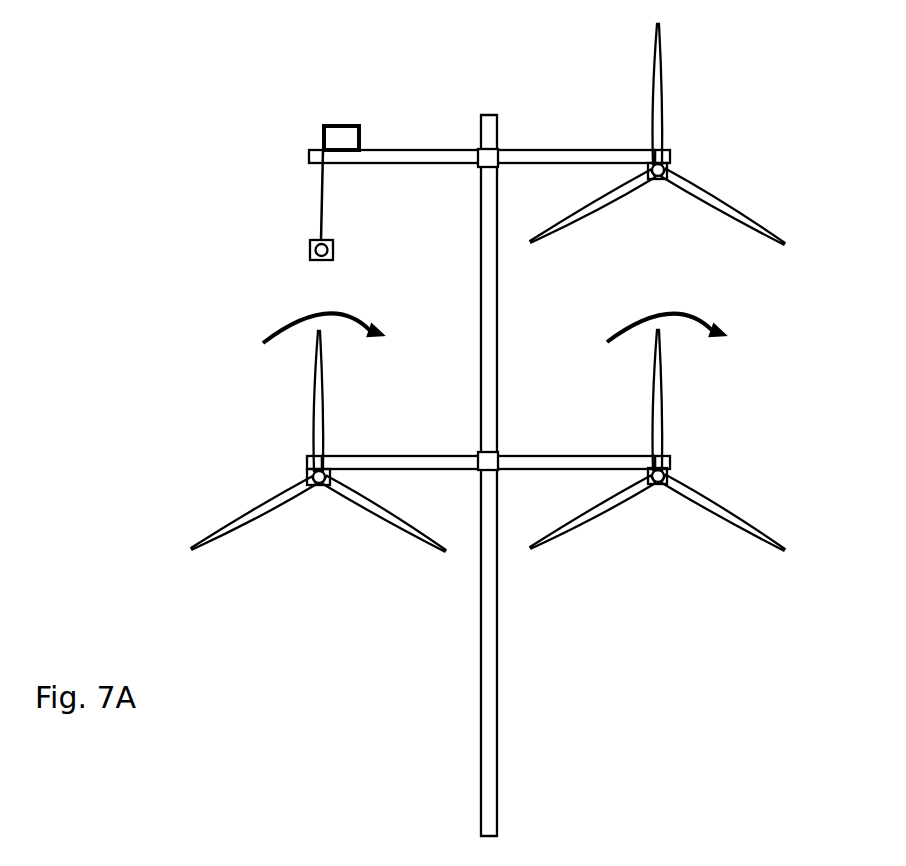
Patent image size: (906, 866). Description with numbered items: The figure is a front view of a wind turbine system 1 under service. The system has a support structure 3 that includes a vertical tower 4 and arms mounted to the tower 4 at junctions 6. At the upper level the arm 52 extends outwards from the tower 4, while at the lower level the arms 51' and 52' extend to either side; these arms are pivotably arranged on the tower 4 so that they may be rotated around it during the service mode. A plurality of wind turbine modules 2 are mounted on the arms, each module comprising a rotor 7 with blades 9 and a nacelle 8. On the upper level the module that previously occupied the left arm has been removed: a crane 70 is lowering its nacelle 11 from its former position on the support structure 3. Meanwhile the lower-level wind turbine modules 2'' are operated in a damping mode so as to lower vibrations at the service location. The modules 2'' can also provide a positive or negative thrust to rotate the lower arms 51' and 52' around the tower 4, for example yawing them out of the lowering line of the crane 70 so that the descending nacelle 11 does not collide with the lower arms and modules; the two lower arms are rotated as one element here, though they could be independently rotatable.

The wind turbine system 1 is at (168, 104).
The crane 70 is at (335, 99).
The junctions 6 is at (479, 150).
The arm 52 is at (583, 130).
The blades 9 is at (685, 94).
The rotor 7 is at (740, 128).
The nacelle 11 is at (299, 265).
The wind turbine modules 2 is at (659, 170).
The support structure 3 is at (523, 359).
The arm 51' is at (393, 435).
The arm 52' is at (583, 435).
The nacelle 8 is at (687, 460).
The wind turbine modules 2'' is at (319, 464).
The tower 4 is at (479, 653).